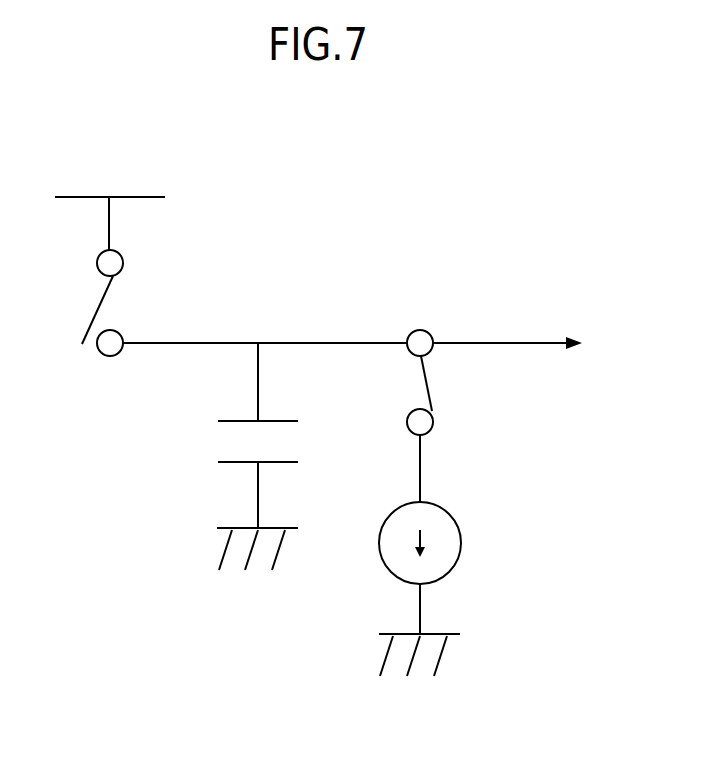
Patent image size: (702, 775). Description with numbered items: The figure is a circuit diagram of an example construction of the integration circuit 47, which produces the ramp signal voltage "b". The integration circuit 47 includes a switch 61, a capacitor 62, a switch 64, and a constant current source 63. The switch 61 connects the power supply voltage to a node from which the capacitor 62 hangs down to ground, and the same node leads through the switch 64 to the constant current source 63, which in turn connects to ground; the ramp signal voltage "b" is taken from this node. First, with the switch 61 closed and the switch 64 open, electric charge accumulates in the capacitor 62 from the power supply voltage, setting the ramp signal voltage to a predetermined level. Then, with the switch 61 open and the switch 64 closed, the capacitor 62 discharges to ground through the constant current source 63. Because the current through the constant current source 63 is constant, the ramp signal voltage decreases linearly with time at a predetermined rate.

The integration circuit 47 is at (376, 166).
The switch 61 is at (145, 285).
The capacitor 62 is at (309, 433).
The constant current source 63 is at (480, 551).
The switch 64 is at (456, 391).